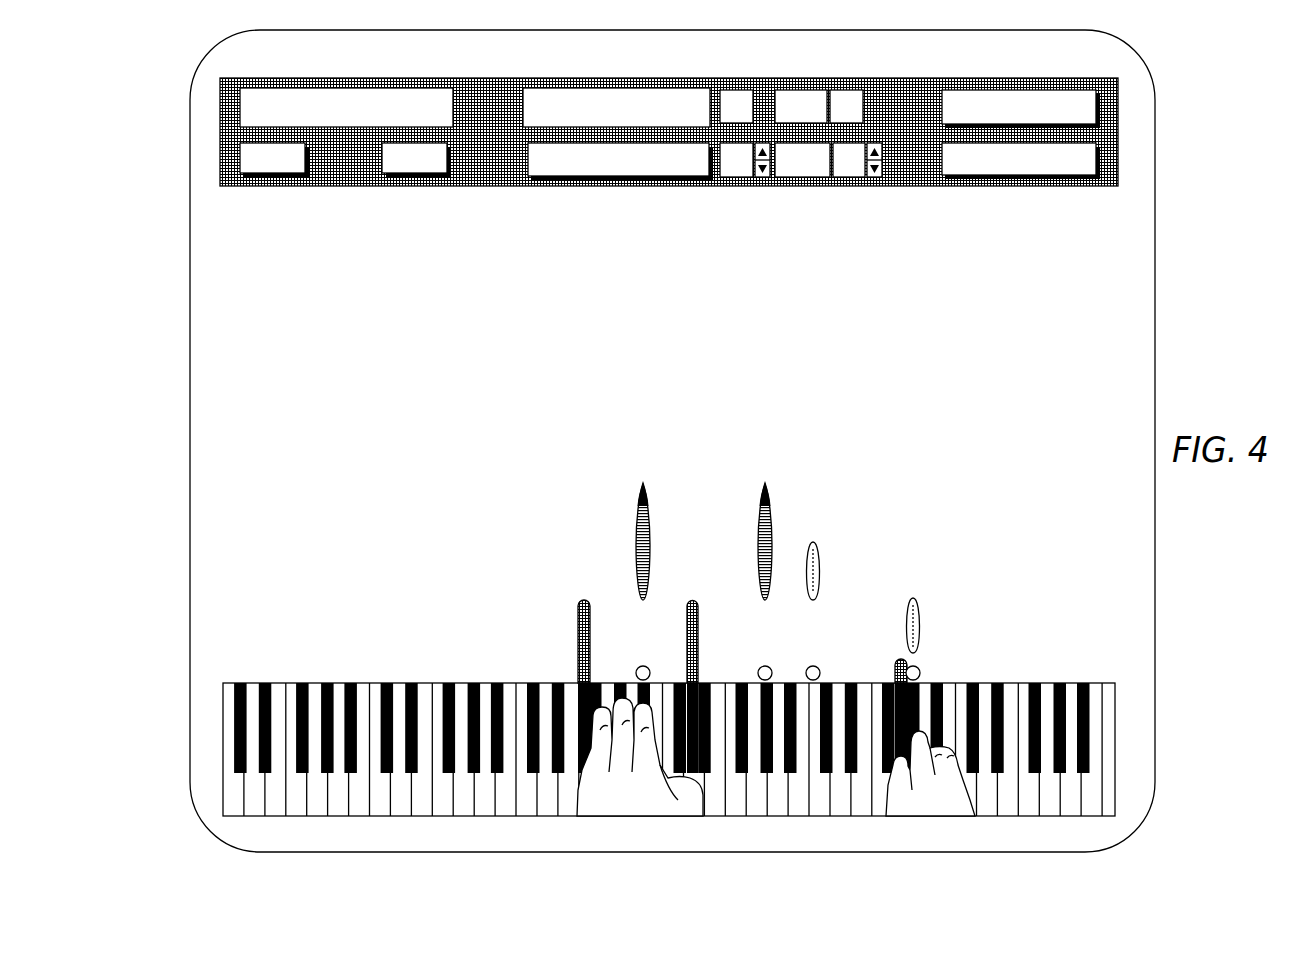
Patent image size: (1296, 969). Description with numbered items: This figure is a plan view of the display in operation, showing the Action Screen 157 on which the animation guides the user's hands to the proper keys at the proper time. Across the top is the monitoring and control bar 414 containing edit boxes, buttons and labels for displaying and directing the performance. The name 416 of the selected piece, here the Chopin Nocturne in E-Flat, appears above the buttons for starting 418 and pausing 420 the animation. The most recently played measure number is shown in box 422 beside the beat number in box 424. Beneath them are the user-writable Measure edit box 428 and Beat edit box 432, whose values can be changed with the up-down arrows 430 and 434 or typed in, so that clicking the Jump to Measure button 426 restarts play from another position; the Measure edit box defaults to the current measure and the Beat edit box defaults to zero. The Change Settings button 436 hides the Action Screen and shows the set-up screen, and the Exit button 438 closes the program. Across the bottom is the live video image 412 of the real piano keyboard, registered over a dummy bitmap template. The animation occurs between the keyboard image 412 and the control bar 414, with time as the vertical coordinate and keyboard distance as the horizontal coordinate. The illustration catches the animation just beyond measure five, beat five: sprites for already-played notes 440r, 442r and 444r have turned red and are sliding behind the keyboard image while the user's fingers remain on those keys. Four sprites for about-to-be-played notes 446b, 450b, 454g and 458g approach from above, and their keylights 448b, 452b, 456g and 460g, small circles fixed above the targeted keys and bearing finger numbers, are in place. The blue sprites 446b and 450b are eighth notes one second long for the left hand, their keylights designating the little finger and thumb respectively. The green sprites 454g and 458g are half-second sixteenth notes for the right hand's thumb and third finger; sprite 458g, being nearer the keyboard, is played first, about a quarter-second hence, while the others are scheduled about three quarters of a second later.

The Action Screen 157 is at (1155, 235).
The live video image of the piano keyboard 412 is at (379, 683).
The monitoring and control bar 414 is at (492, 78).
The name of the selected piece 416 is at (348, 87).
The start button 418 is at (263, 178).
The pause button 420 is at (405, 178).
The measure number box 422 is at (734, 89).
The beat number box 424 is at (841, 89).
The Jump to Measure button 426 is at (572, 179).
The Measure edit box 428 is at (733, 178).
The up-down arrows for measure 430 is at (762, 178).
The Beat edit box 432 is at (841, 178).
The up-down arrows for beat 434 is at (872, 178).
The Change Settings button 436 is at (982, 90).
The Exit button 438 is at (980, 178).
The red sprite for already-played note 440r is at (578, 630).
The red sprite for already-played note 442r is at (700, 628).
The red sprite for already-played note 444r is at (893, 676).
The blue sprite 446b is at (637, 522).
The blue keylight 448b is at (636, 672).
The blue sprite 450b is at (760, 522).
The blue keylight 452b is at (758, 672).
The green sprite 454g is at (820, 563).
The green keylight 456g is at (806, 673).
The green sprite 458g is at (920, 620).
The green keylight 460g is at (920, 668).